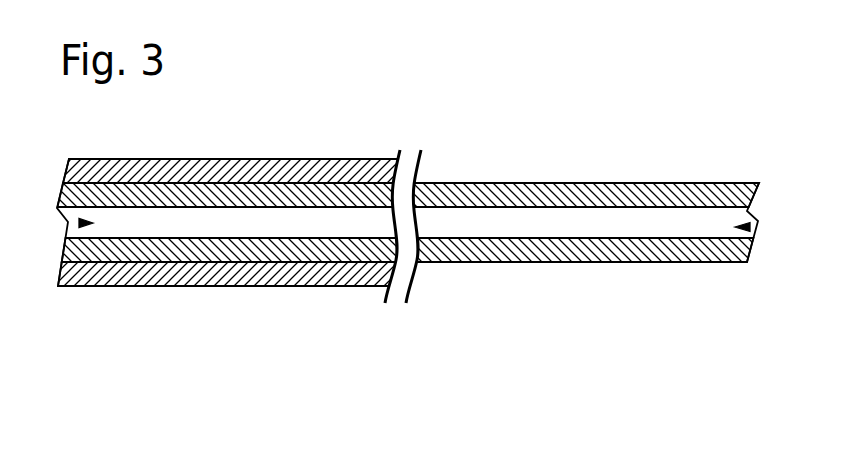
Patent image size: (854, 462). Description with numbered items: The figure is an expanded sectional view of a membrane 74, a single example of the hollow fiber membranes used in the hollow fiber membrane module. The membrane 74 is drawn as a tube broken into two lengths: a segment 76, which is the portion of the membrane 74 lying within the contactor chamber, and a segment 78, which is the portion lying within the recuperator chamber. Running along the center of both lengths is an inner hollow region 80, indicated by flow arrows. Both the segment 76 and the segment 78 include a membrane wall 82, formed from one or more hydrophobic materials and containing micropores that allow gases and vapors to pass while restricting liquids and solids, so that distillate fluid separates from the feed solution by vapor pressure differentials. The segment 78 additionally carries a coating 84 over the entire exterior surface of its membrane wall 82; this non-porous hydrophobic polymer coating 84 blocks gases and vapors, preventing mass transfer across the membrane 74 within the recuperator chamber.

The membrane 74 is at (416, 201).
The segment 76 is at (594, 325).
The segment 78 is at (214, 342).
The inner hollow region 80 is at (78, 223).
The membrane wall 82 is at (146, 195).
The coating 84 is at (283, 172).